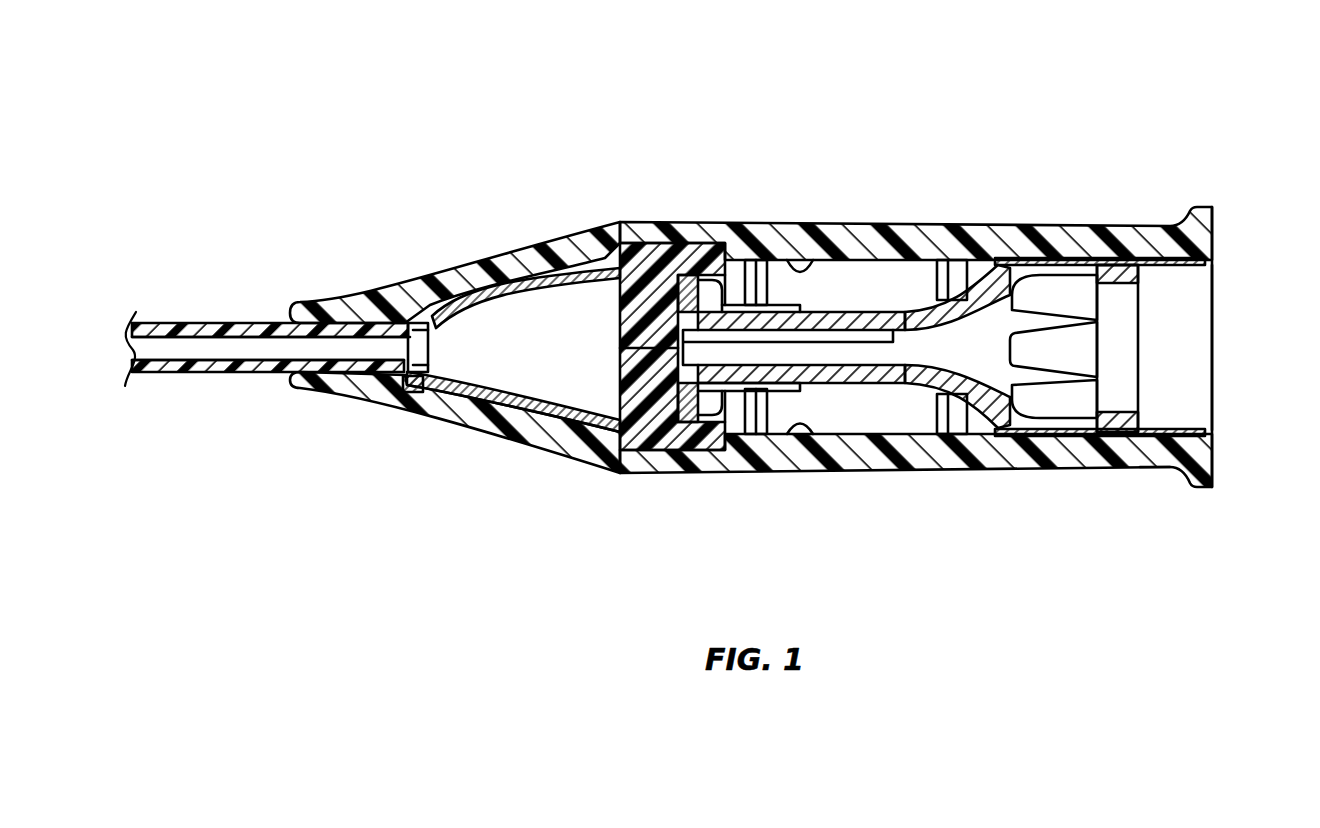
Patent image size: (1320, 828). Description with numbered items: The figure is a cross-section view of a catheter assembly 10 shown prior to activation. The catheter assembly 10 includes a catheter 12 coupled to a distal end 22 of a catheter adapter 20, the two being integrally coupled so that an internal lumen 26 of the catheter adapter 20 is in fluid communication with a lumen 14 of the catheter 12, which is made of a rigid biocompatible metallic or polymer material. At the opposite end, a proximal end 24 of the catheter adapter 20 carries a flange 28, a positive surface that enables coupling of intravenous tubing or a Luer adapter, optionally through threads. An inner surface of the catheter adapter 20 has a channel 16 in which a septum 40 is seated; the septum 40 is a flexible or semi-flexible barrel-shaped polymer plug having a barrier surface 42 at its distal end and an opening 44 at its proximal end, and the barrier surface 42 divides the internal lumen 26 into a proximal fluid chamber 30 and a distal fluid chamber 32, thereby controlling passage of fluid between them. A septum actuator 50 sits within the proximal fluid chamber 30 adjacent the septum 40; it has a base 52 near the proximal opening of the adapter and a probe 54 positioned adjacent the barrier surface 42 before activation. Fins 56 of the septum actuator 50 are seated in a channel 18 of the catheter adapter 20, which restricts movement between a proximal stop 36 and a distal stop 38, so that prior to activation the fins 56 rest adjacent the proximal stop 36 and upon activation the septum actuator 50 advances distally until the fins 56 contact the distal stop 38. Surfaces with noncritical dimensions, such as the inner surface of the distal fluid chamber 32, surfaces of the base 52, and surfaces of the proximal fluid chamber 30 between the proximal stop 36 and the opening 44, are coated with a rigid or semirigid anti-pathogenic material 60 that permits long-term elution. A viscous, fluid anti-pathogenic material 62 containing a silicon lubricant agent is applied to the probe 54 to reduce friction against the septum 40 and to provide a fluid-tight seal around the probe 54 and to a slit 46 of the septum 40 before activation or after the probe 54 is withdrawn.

The catheter assembly 10 is at (1050, 122).
The catheter 12 is at (170, 365).
The lumen of catheter 14 is at (215, 345).
The channel 16 is at (657, 472).
The channel 18 is at (815, 262).
The catheter adapter 20 is at (440, 428).
The distal end of catheter adapter 22 is at (290, 392).
The proximal end of catheter adapter 24 is at (1213, 457).
The internal lumen 26 is at (520, 300).
The flange 28 is at (1210, 488).
The proximal fluid chamber 30 is at (903, 272).
The distal fluid chamber 32 is at (498, 420).
The proximal stop 36 is at (997, 437).
The distal stop 38 is at (771, 440).
The septum 40 is at (700, 250).
The barrier surface 42 is at (600, 365).
The opening 44 is at (1213, 330).
The slit 46 is at (650, 345).
The septum actuator 50 is at (1140, 302).
The base 52 is at (1120, 265).
The probe 54 is at (842, 440).
The fins 56 is at (923, 417).
The anti-pathogenic material 60 is at (575, 285).
The anti-pathogenic material 62 is at (778, 268).